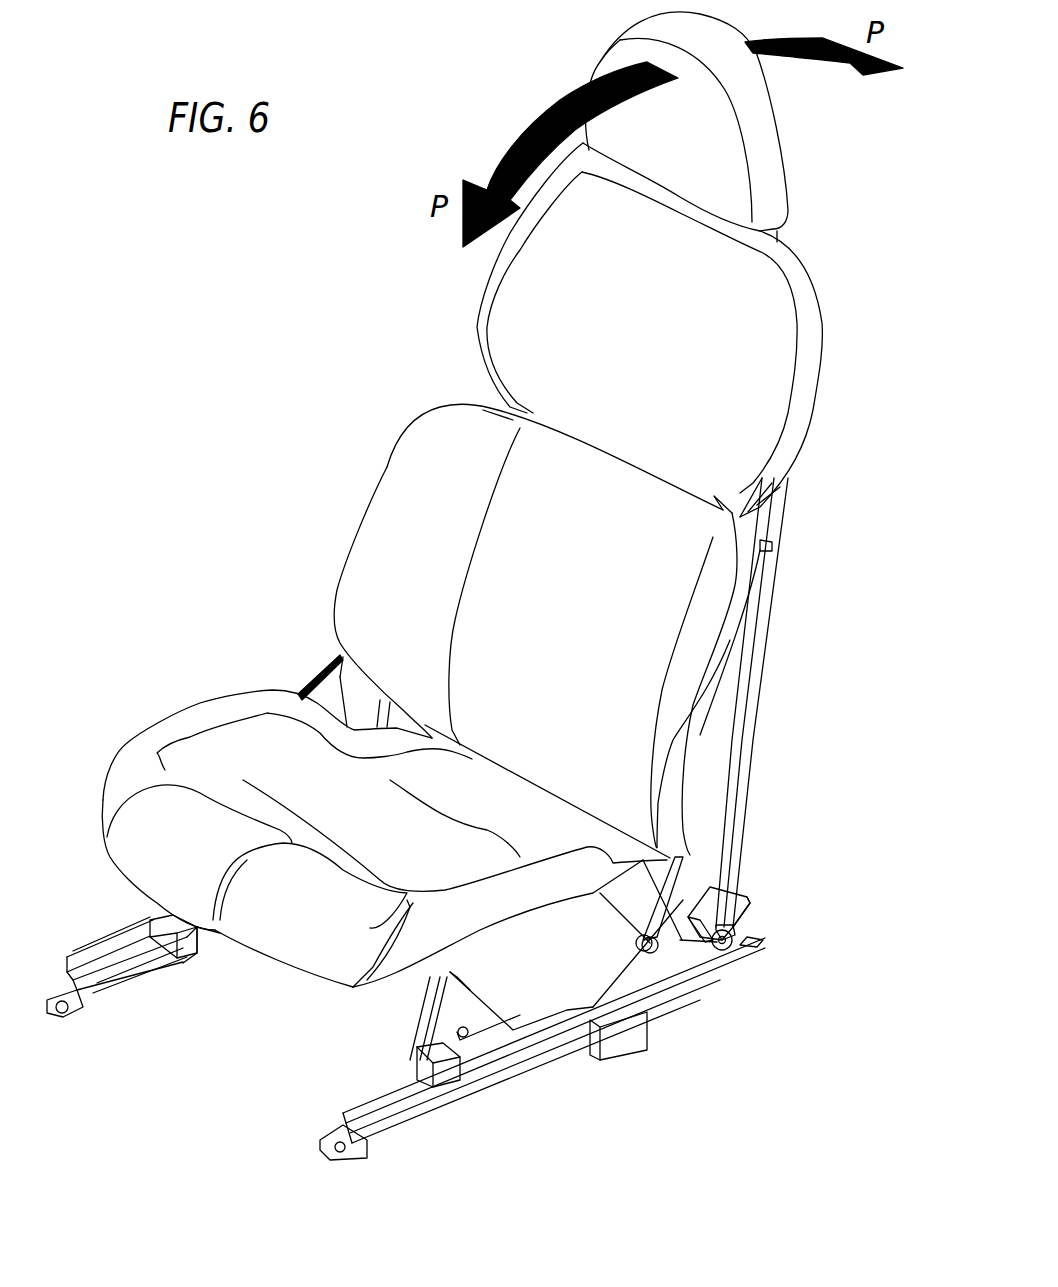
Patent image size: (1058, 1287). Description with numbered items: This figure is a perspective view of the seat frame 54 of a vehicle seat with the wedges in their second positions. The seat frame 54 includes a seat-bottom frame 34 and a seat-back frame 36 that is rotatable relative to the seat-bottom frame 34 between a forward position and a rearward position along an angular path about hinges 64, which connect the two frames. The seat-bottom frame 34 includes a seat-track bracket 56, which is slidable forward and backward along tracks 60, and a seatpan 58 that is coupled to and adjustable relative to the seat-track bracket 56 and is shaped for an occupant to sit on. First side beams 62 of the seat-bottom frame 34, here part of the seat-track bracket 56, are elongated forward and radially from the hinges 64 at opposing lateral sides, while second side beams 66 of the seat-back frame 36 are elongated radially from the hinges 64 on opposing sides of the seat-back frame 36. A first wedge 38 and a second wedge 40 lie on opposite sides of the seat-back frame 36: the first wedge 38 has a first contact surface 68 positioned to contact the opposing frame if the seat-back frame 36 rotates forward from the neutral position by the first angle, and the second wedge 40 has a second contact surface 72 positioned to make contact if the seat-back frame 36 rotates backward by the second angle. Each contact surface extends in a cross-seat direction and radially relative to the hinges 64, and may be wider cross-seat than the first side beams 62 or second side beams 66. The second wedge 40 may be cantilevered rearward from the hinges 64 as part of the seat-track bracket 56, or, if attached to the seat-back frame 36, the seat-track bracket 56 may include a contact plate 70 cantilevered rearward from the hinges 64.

The seat-bottom frame 34 is at (187, 707).
The seat-back frame 36 is at (387, 463).
The first wedge 38 is at (733, 863).
The second wedge 40 is at (743, 893).
The seat frame 54 is at (295, 333).
The seat-track bracket 56 is at (393, 983).
The seatpan 58 is at (612, 975).
The tracks 60 is at (355, 1110).
The first side beams 62 is at (670, 858).
The hinges 64 is at (730, 950).
The second side beams 66 is at (740, 812).
The first contact surface 68 is at (692, 920).
The contact plate 70 is at (755, 945).
The second contact surface 72 is at (745, 913).